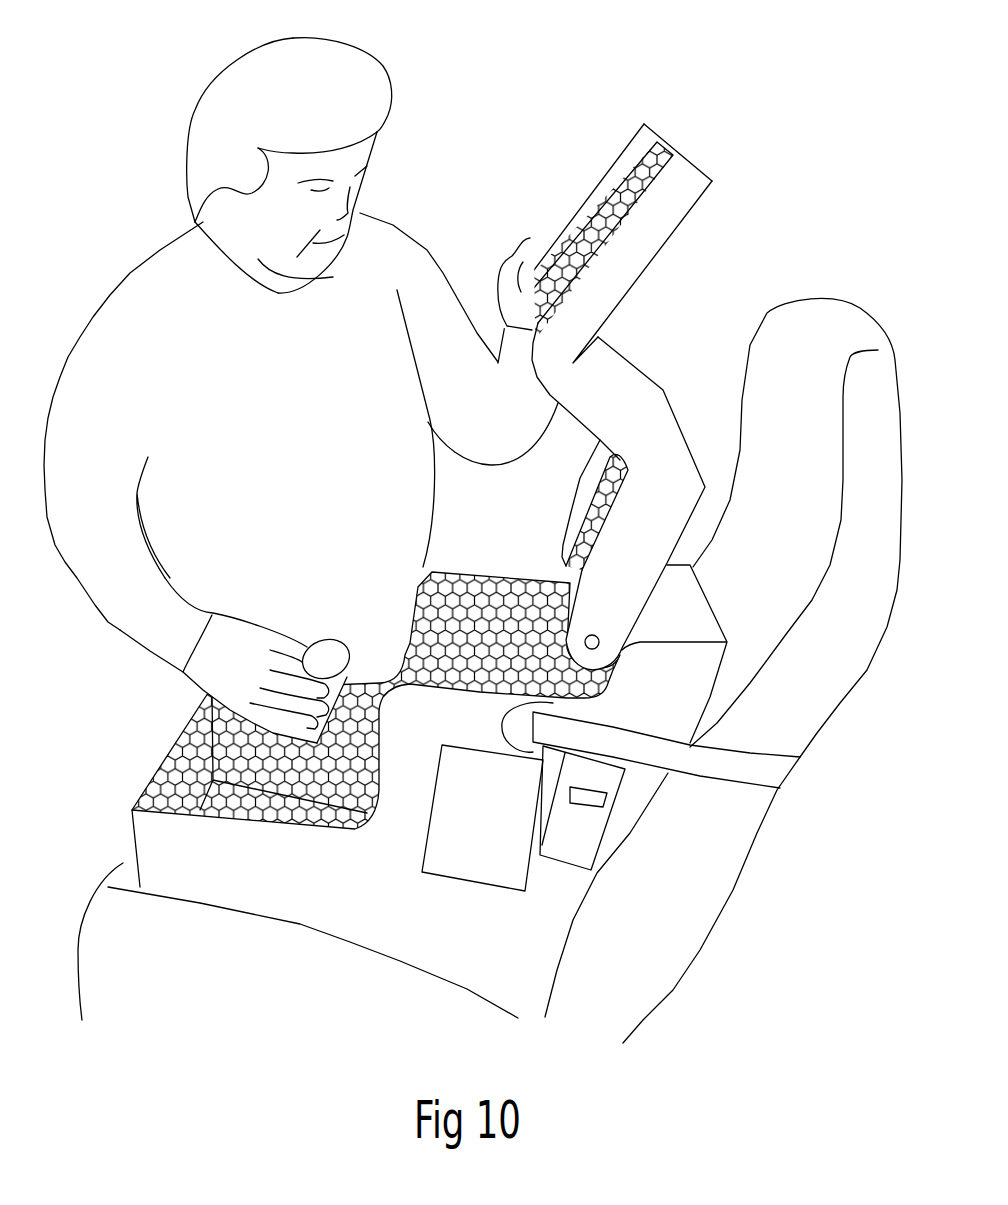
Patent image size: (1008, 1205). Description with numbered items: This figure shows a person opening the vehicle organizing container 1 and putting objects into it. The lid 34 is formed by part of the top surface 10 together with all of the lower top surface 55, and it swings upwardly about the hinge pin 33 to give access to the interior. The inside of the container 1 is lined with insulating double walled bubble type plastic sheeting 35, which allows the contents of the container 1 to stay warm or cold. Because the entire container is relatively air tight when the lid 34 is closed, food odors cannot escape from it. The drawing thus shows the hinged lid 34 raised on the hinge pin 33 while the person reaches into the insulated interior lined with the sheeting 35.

The container 1 is at (153, 843).
The top surface 10 is at (637, 378).
The hinge pin 33 is at (594, 634).
The lid 34 is at (687, 178).
The insulating double walled bubble type plastic sheeting 35 is at (613, 205).
The lower top surface 55 is at (657, 257).